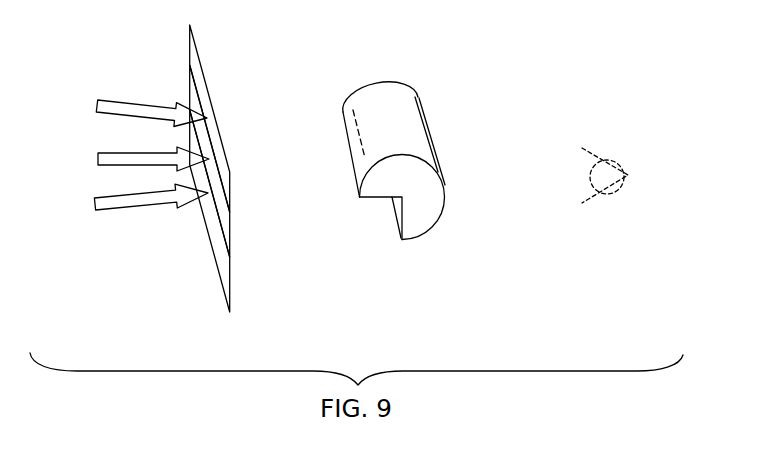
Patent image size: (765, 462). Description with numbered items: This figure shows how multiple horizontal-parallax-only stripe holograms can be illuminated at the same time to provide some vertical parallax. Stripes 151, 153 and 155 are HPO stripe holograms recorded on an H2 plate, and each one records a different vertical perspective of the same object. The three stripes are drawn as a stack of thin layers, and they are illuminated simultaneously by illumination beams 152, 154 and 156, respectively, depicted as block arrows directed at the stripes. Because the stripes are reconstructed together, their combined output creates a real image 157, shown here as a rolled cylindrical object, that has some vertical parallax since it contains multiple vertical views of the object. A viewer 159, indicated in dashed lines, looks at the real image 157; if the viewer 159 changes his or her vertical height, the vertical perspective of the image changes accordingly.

The stripe 151 is at (230, 273).
The stripe 153 is at (230, 230).
The stripe 155 is at (230, 188).
The illumination beam 152 is at (100, 213).
The illumination beam 154 is at (108, 154).
The illumination beam 156 is at (118, 105).
The real image 157 is at (395, 108).
The viewer 159 is at (611, 160).